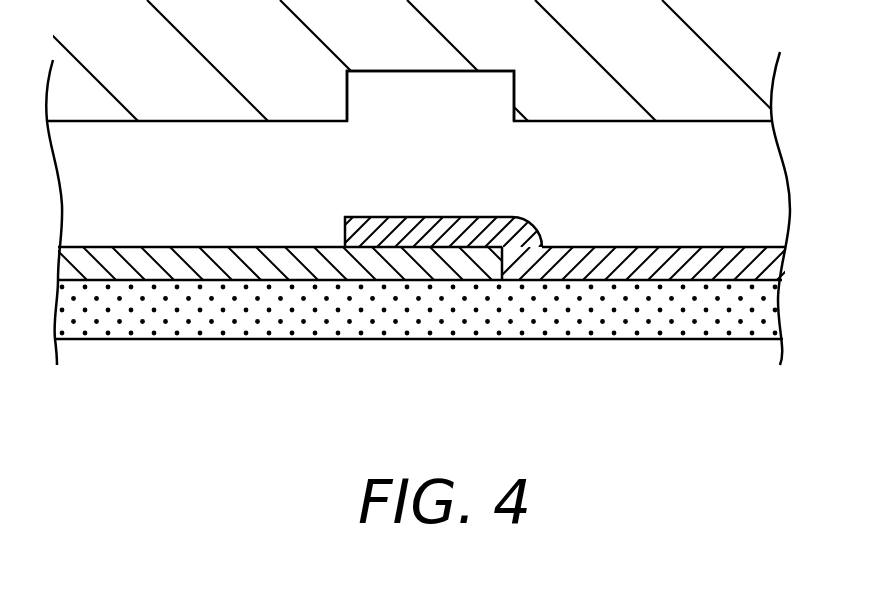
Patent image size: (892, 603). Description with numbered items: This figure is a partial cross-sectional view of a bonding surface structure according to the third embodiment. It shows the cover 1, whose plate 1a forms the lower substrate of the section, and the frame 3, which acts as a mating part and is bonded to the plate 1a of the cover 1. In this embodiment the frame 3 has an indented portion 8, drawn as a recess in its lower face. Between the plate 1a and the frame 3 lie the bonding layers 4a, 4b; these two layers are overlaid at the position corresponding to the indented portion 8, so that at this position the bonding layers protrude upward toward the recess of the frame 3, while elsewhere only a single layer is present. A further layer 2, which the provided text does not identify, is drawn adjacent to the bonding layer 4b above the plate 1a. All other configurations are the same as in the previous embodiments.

The cover 1 is at (448, 367).
The plate 1a is at (578, 328).
The insulating layer 2 is at (693, 251).
The frame 3 is at (680, 102).
The bonding layer 4a is at (520, 234).
The bonding layer 4b is at (222, 256).
The indented portion 8 is at (425, 90).